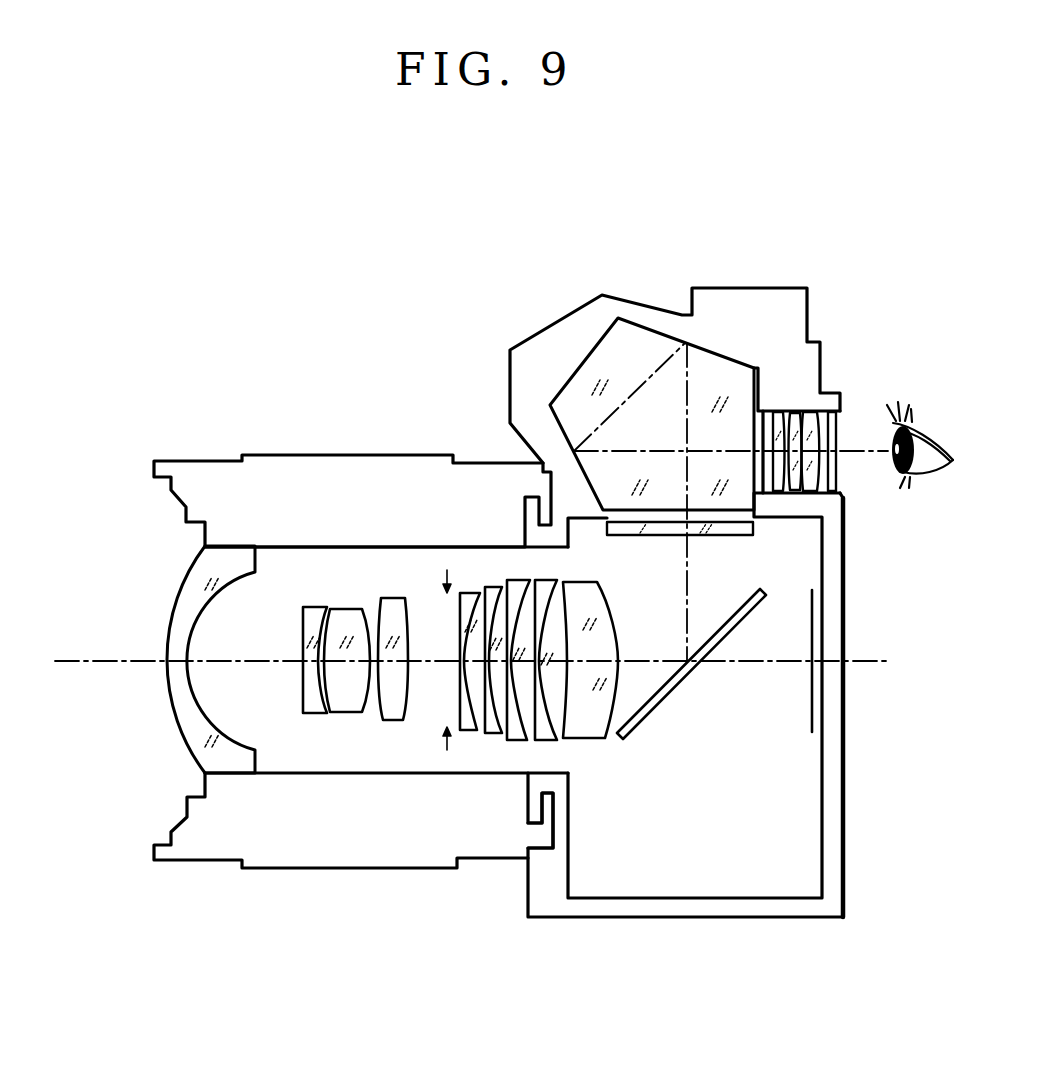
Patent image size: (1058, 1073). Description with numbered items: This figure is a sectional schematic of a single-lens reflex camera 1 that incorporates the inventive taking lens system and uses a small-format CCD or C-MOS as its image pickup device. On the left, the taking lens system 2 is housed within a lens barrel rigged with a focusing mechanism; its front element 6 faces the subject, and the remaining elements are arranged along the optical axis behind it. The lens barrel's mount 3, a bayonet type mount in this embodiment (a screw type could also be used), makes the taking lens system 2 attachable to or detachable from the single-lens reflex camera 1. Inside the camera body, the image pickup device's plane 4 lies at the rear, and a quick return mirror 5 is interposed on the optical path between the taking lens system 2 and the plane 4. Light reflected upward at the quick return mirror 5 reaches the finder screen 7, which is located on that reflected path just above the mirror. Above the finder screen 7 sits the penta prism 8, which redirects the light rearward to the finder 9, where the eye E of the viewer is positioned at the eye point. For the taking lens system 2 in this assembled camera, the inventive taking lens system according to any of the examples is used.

The single-lens reflex camera 1 is at (848, 788).
The taking lens system 2 is at (170, 762).
The lens barrel's mount 3 is at (532, 835).
The image pickup device's plane 4 is at (812, 712).
The quick return mirror 5 is at (647, 716).
The front lens element 6 is at (102, 661).
The finder screen 7 is at (738, 538).
The penta prism 8 is at (593, 345).
The finder 9 is at (812, 495).
The eye of a viewer E is at (910, 428).